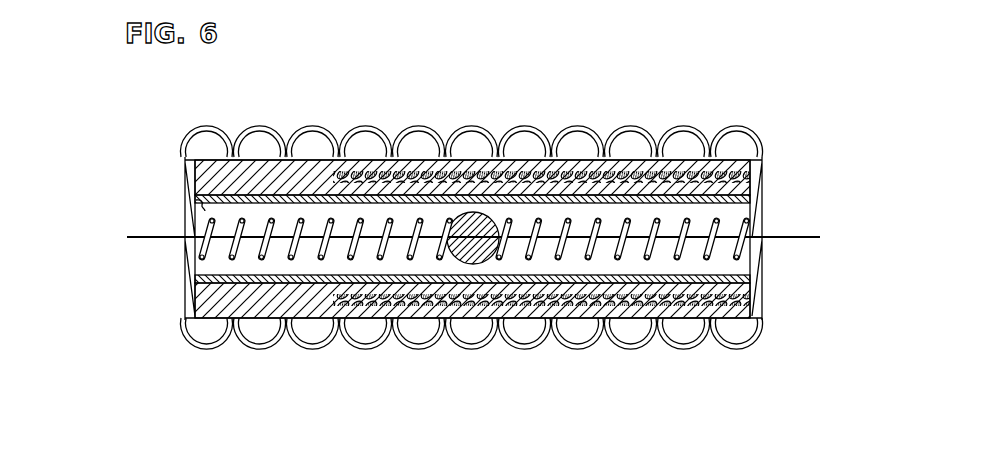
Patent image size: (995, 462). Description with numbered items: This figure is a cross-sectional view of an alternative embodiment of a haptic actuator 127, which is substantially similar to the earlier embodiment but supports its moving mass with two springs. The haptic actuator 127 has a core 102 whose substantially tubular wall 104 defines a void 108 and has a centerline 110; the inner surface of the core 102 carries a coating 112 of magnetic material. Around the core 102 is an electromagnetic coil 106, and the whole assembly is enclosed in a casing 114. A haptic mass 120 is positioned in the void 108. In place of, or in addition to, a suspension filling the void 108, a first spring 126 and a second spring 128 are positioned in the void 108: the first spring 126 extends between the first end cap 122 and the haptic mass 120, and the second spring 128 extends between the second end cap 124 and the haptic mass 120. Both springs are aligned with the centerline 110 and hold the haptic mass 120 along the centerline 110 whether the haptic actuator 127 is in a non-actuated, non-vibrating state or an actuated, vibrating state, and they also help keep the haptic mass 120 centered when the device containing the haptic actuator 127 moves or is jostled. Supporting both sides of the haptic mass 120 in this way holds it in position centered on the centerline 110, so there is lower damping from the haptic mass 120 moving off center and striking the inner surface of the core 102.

The core 102 is at (737, 160).
The tubular wall 104 is at (750, 182).
The electromagnetic coil 106 is at (333, 298).
The void 108 is at (200, 206).
The centerline 110 is at (143, 237).
The coating 112 is at (240, 273).
The casing 114 is at (632, 344).
The haptic mass 120 is at (452, 258).
The first end cap 122 is at (185, 173).
The second end cap 124 is at (763, 300).
The first spring 126 is at (242, 220).
The haptic actuator 127 is at (650, 115).
The second spring 128 is at (707, 258).